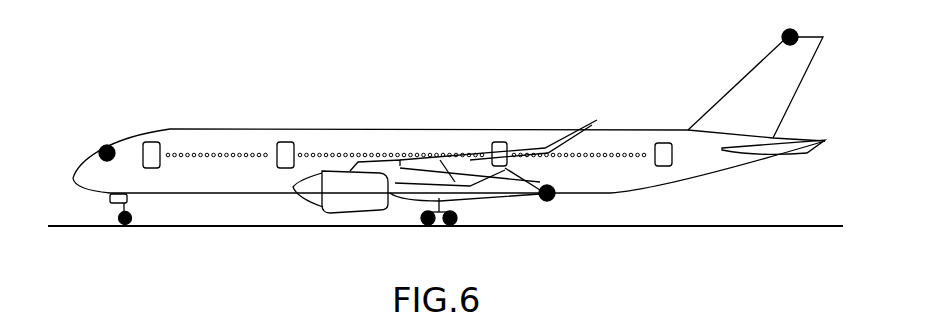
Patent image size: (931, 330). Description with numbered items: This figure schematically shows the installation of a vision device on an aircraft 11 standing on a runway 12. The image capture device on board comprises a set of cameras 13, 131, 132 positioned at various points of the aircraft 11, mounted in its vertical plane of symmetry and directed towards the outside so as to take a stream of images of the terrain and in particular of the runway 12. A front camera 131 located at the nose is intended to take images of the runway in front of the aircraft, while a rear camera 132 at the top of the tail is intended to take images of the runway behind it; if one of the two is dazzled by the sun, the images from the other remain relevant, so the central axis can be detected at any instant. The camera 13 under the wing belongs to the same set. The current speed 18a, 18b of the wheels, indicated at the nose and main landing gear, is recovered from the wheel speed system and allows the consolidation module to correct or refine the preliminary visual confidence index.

The aircraft 11 is at (408, 129).
The runway 12 is at (57, 223).
The set of cameras 13 is at (556, 202).
The front camera 131 is at (99, 148).
The rear camera 132 is at (781, 37).
The current speed of the wheels 18a is at (118, 213).
The current speed of the wheels 18b is at (458, 214).